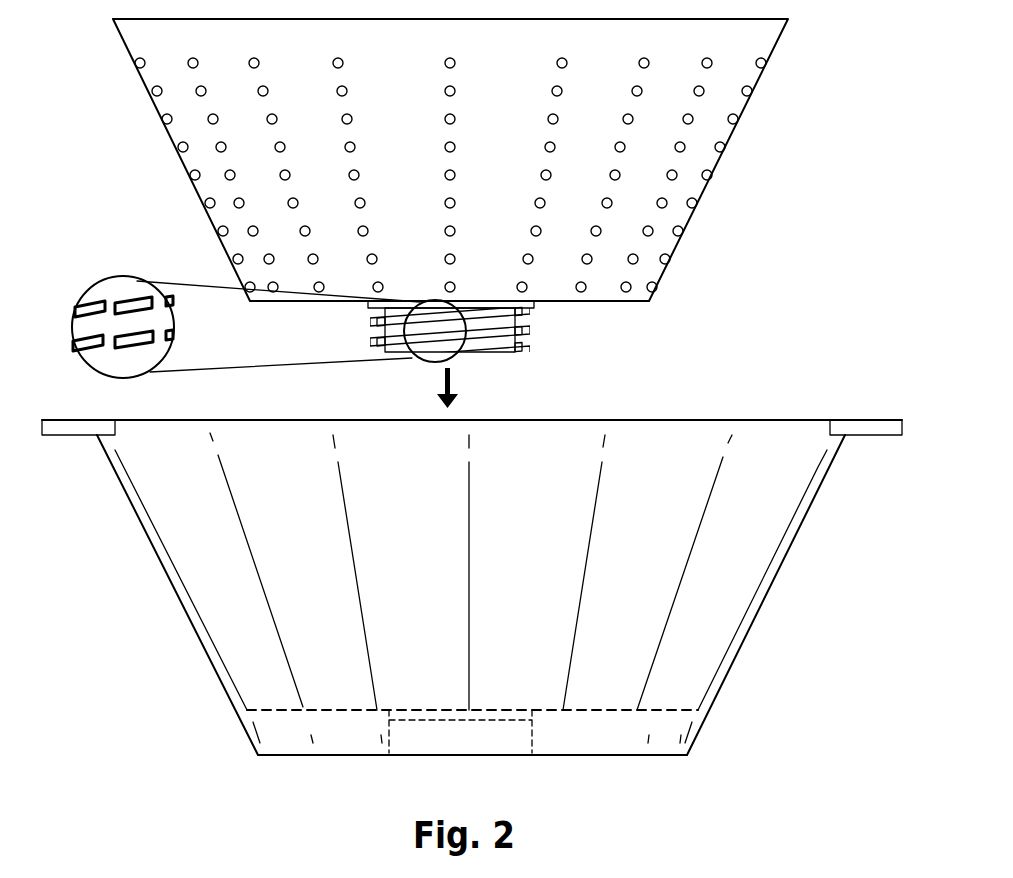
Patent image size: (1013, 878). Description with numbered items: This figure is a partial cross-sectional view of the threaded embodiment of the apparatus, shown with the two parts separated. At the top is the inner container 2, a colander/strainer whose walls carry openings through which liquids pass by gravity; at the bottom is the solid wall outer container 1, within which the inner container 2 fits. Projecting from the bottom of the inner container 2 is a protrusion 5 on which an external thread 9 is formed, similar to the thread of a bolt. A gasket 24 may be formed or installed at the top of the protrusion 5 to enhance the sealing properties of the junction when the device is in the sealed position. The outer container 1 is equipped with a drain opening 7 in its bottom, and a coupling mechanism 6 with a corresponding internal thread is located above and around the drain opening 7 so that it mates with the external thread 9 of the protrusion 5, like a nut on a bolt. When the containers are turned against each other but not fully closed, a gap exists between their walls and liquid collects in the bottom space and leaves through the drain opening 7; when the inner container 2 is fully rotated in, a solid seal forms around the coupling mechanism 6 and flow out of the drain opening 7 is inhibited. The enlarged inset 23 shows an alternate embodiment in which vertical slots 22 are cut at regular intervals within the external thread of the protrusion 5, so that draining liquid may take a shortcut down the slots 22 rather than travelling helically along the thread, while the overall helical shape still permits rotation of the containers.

The outer container 1 is at (472, 624).
The inner container 2 is at (166, 122).
The protrusion 5 is at (506, 345).
The coupling mechanism 6 is at (543, 719).
The drain opening 7 is at (519, 756).
The external thread 9 is at (533, 350).
The vertical slots 22 is at (86, 309).
The inset 23 is at (90, 366).
The gasket 24 is at (537, 306).